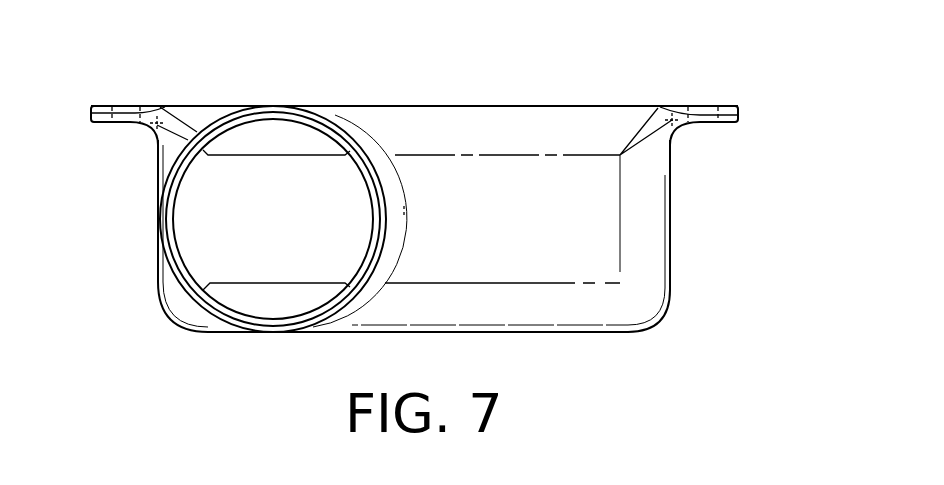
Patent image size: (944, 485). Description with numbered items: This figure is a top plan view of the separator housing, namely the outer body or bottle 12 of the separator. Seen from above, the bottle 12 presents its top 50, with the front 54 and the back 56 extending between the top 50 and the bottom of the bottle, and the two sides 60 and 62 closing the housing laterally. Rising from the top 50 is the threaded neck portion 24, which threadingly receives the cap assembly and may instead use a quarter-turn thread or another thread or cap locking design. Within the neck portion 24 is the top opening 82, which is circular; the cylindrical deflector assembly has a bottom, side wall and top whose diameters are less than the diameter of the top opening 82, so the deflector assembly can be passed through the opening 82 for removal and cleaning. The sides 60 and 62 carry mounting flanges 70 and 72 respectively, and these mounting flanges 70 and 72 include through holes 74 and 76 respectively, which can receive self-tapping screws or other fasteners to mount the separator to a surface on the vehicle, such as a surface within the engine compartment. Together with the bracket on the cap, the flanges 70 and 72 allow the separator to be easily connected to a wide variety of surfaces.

The outer body or bottle 12 is at (660, 29).
The threaded neck portion 24 is at (303, 107).
The top 50 is at (497, 165).
The front 54 is at (505, 333).
The back 56 is at (405, 107).
The side 60 is at (156, 180).
The side 62 is at (672, 240).
The mounting flange 70 is at (130, 123).
The mounting flange 72 is at (707, 125).
The through hole 74 is at (125, 105).
The through hole 76 is at (700, 103).
The top opening 82 is at (265, 130).